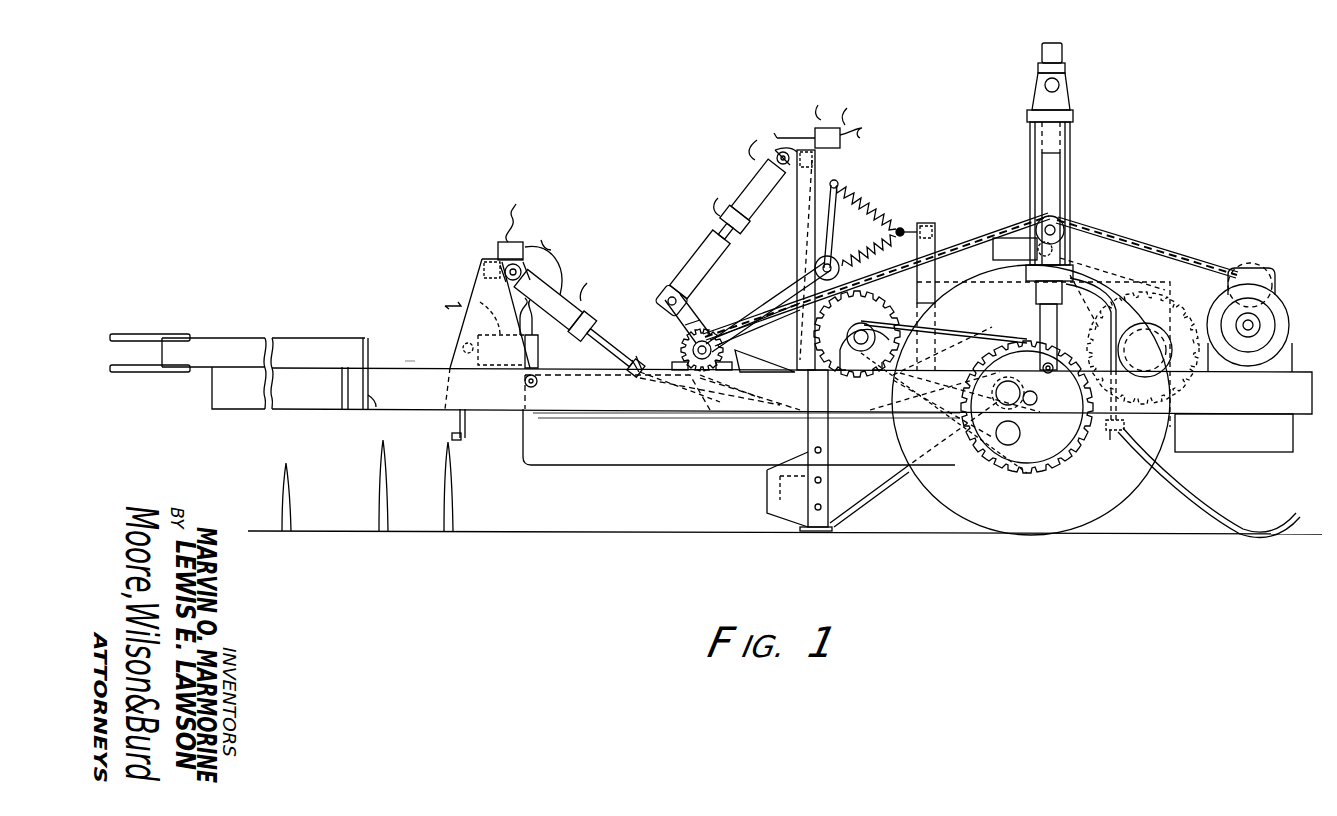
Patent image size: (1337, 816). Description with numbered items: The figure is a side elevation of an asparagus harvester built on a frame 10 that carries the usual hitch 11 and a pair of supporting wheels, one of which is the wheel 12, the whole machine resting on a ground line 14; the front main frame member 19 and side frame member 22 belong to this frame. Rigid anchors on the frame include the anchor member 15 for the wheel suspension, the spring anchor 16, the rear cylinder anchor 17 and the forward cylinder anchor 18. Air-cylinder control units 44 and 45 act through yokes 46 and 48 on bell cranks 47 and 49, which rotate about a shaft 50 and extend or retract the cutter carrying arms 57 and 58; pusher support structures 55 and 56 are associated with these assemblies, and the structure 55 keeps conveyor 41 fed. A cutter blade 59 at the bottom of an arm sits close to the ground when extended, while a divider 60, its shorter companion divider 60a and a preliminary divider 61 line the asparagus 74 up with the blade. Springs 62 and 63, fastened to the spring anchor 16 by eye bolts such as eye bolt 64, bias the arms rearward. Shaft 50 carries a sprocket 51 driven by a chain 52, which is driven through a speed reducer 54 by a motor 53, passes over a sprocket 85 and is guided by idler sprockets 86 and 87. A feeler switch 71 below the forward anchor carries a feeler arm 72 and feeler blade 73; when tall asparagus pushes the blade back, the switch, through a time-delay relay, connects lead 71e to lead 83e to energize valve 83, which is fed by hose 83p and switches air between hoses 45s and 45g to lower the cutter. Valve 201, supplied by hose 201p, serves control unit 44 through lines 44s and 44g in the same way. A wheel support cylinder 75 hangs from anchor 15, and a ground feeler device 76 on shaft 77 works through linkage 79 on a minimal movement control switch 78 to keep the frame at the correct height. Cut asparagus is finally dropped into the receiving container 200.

The frame 10 is at (410, 352).
The hitch 11 is at (168, 334).
The supporting wheel 12 is at (1072, 534).
The ground line 14 is at (640, 533).
The anchor member 15 is at (1042, 52).
The spring anchor 16 is at (931, 223).
The rear cylinder anchor 17 is at (818, 160).
The forward cylinder anchor 18 is at (485, 261).
The main frame member 19 is at (370, 411).
The side frame member 22 is at (634, 411).
The conveyor 41 is at (878, 494).
The control unit 44 is at (566, 296).
The hose 44g is at (551, 266).
The hose 44s is at (548, 250).
The control unit 45 is at (749, 188).
The hose 45g is at (756, 142).
The hose 45s is at (716, 202).
The yoke 46 is at (699, 255).
The bell crank 47 is at (718, 303).
The yoke 48 is at (630, 358).
The bell crank 49 is at (705, 396).
The shaft 50 is at (686, 353).
The sprocket 51 is at (690, 333).
The chain 52 is at (978, 245).
The motor 53 is at (1291, 320).
The speed reducer 54 is at (1262, 268).
The pusher support structure 55 is at (789, 291).
The pusher support structure 56 is at (775, 362).
The cutter carrying arm 57 is at (829, 495).
The cutter carrying arm 58 is at (833, 224).
The cutter blade 59 is at (804, 531).
The divider 60 is at (767, 497).
The shorter divider 60a is at (780, 476).
The preliminary divider 61 is at (540, 468).
The spring 62 is at (871, 253).
The spring 63 is at (866, 200).
The eye bolt 64 is at (901, 226).
The feeler switch 71 is at (531, 337).
The electrical lead 71e is at (451, 305).
The feeler arm 72 is at (467, 425).
The feeler blade 73 is at (461, 440).
The asparagus 74 is at (446, 477).
The wheel support cylinder 75 is at (1072, 160).
The feeler device 76 is at (1217, 517).
The shaft 77 is at (1112, 434).
The minimal movement control switch 78 is at (1015, 238).
The linkage 79 is at (1093, 290).
The valve 83 is at (828, 128).
The hose 83p is at (790, 138).
The lead 83e is at (518, 305).
The sprocket 85 is at (1176, 320).
The idler sprocket 86 is at (875, 312).
The idler sprocket 87 is at (1066, 225).
The receiving container 200 is at (1268, 446).
The valve 201 is at (524, 246).
The hose 201p is at (506, 213).